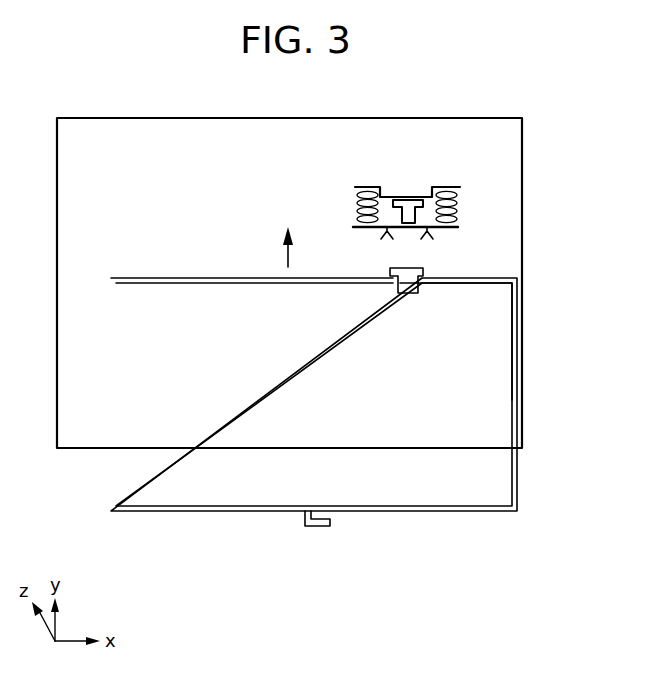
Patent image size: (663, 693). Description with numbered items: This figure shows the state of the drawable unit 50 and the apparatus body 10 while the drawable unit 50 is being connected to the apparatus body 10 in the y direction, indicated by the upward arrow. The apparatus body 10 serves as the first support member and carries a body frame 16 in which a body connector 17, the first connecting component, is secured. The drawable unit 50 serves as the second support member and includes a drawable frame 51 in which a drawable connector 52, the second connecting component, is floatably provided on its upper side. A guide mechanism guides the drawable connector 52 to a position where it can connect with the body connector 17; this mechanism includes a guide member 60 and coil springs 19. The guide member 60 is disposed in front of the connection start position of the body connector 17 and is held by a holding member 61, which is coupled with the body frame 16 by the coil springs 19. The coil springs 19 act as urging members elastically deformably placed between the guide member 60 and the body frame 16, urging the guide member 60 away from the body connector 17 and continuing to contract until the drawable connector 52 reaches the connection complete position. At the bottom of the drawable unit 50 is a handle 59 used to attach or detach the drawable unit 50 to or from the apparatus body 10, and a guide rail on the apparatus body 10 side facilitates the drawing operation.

The apparatus body 10 is at (524, 153).
The body frame 16 is at (446, 186).
The body connector 17 is at (408, 204).
The coil springs 19 is at (454, 208).
The holding member 61 is at (452, 229).
The guide member 60 is at (428, 243).
The drawable frame 51 is at (480, 284).
The drawable unit 50 is at (520, 477).
The drawable connector 52 is at (410, 289).
The handle 59 is at (322, 527).